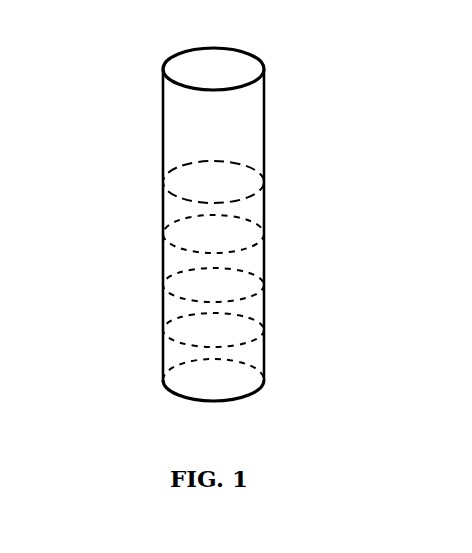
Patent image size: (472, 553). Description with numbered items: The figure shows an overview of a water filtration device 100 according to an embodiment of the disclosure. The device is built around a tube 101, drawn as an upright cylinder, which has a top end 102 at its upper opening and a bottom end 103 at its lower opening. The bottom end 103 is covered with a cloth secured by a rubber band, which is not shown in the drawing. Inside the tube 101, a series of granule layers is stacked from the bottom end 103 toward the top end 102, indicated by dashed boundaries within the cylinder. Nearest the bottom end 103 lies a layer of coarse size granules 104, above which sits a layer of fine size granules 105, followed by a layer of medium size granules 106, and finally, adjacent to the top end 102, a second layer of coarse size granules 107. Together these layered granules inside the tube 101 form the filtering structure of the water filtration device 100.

The water filtration device 100 is at (207, 225).
The tube 101 is at (163, 127).
The top end 102 is at (205, 67).
The bottom end 103 is at (200, 403).
The layer of coarse size granules 104 is at (247, 358).
The layer of fine size granules 105 is at (246, 309).
The layer of medium size granules 106 is at (245, 259).
The second layer of coarse size granules 107 is at (240, 208).